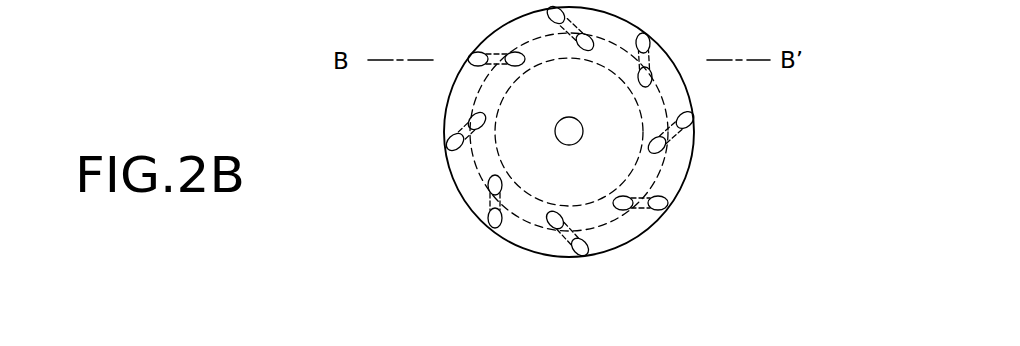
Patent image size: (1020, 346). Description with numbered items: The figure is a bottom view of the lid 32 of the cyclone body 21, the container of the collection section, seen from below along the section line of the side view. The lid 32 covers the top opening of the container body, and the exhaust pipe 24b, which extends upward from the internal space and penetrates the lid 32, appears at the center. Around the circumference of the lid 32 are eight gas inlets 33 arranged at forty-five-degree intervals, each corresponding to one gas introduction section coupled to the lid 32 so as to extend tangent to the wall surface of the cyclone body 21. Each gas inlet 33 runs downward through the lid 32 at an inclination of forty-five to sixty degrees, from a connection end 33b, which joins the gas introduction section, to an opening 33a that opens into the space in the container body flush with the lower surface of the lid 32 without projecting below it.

The cyclone body 21 is at (428, 197).
The exhaust pipe 24b is at (557, 126).
The lid 32 is at (695, 140).
The gas inlet 33 is at (594, 155).
The opening 33a is at (628, 213).
The connection end 33b is at (660, 208).